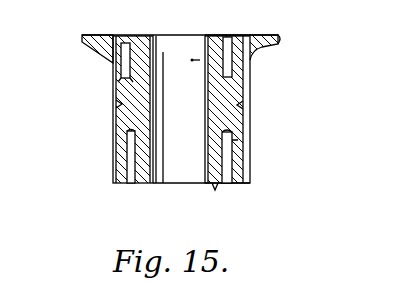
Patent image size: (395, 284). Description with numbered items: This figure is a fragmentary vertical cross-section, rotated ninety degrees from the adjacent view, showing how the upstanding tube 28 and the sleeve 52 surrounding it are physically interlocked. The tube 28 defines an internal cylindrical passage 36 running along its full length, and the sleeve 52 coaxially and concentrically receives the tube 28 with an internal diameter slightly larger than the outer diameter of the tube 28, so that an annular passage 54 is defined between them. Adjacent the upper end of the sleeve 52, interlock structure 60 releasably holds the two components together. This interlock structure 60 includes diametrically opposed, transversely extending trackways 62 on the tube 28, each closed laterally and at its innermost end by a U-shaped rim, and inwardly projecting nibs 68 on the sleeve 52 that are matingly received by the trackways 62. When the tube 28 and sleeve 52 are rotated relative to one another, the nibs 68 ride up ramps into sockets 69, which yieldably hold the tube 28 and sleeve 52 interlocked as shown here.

The tube 28 is at (248, 166).
The cylindrical passage 36 is at (248, 58).
The sleeve 52 is at (112, 152).
The annular passage 54 is at (127, 183).
The interlock structure 60 is at (118, 84).
The trackway 62 is at (118, 62).
The nib 68 is at (118, 103).
The socket 69 is at (205, 104).